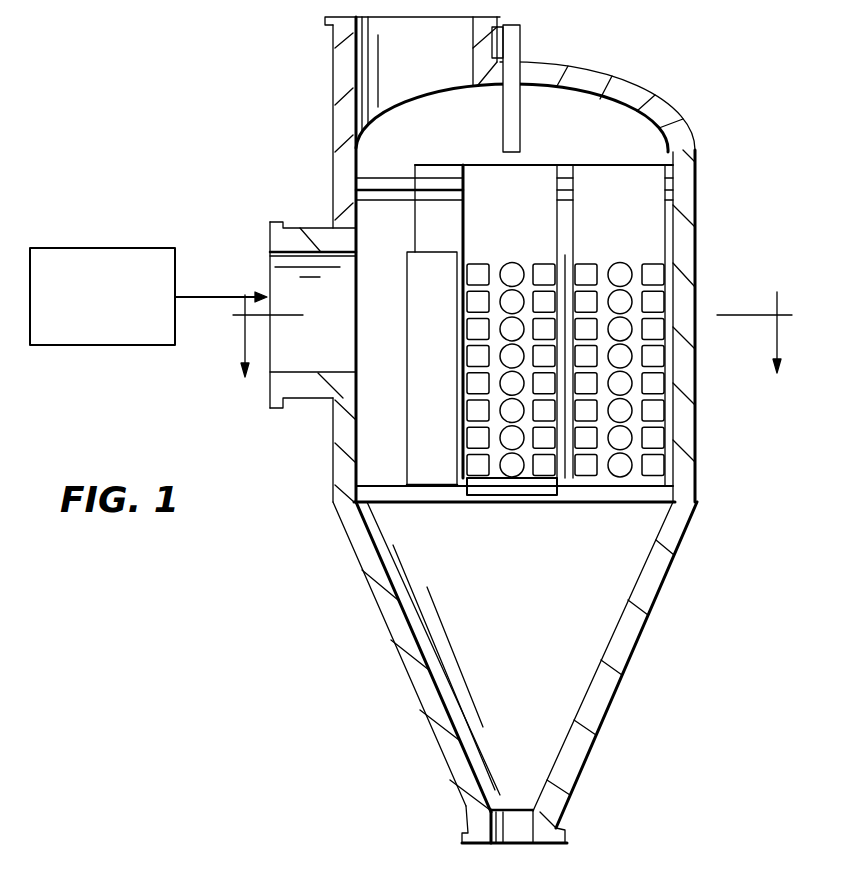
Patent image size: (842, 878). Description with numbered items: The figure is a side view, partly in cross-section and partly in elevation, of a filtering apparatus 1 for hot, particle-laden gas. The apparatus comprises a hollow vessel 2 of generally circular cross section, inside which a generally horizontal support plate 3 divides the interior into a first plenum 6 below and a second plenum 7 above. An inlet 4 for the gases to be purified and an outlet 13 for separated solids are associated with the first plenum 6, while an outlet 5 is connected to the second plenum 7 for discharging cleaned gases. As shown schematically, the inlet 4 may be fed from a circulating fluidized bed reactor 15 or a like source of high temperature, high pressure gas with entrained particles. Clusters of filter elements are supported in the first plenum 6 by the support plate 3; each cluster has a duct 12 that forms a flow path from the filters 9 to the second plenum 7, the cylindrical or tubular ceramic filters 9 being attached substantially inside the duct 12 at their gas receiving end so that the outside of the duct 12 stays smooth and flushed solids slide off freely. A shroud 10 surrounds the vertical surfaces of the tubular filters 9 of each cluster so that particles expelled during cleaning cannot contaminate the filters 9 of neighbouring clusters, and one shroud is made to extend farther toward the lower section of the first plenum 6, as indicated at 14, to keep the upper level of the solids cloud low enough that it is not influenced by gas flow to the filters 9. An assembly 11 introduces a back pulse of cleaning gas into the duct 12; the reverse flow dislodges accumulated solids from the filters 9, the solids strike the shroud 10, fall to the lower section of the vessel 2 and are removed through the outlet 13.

The filtering apparatus 1 is at (709, 106).
The hollow vessel 2 is at (712, 432).
The support plate 3 is at (388, 195).
The inlet 4 is at (312, 310).
The outlet 5 is at (427, 52).
The first plenum 6 is at (572, 687).
The second plenum 7 is at (636, 100).
The filter 9 is at (650, 277).
The shroud 10 is at (418, 472).
The assembly for introducing a pulse of cleaning gas 11 is at (513, 47).
The duct 12 is at (637, 178).
The outlet for separated solids 13 is at (518, 835).
The extended shroud 14 is at (535, 487).
The circulating fluidized bed reactor 15 is at (81, 342).